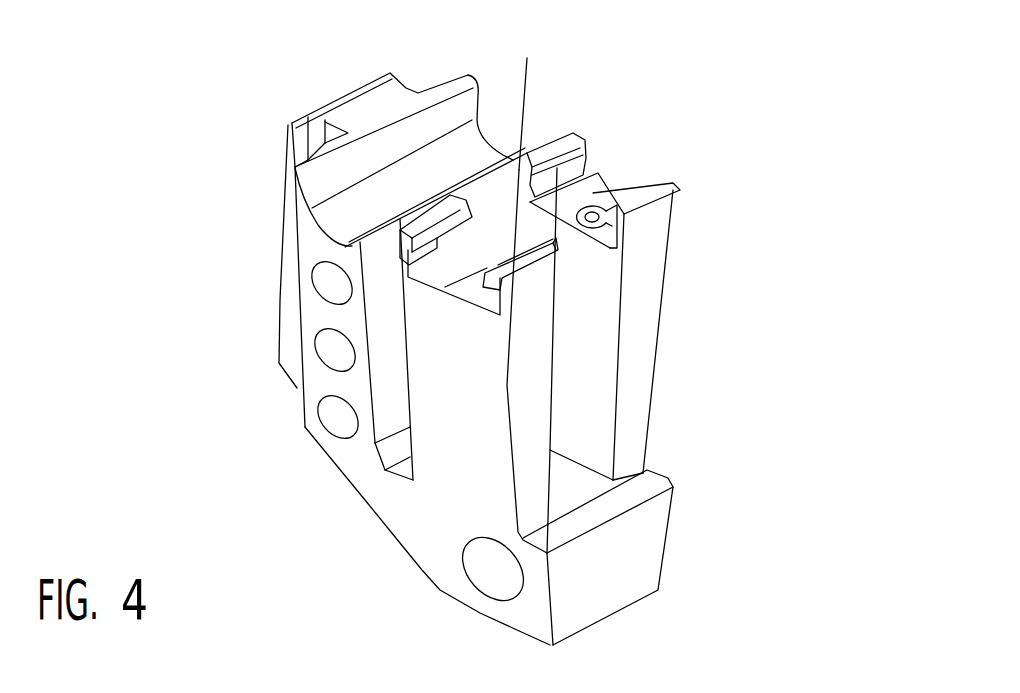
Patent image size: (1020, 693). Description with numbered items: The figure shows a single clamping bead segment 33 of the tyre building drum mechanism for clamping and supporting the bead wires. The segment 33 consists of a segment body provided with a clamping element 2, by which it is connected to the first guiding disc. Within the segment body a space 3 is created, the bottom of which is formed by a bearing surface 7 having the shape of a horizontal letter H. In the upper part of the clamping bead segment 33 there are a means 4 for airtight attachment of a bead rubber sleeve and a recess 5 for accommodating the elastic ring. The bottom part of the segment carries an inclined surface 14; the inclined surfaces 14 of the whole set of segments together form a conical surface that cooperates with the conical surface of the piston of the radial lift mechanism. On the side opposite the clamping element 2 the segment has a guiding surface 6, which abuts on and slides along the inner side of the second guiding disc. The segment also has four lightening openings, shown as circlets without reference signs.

The clamping element 2 is at (296, 142).
The space 3 is at (577, 388).
The means for airtight attachment of a bead rubber sleeve 4 is at (593, 217).
The recess 5 is at (460, 154).
The guiding surface 6 is at (626, 568).
The bearing surface 7 is at (570, 482).
The inclined surface 14 is at (375, 509).
The clamping bead segment 33 is at (168, 474).